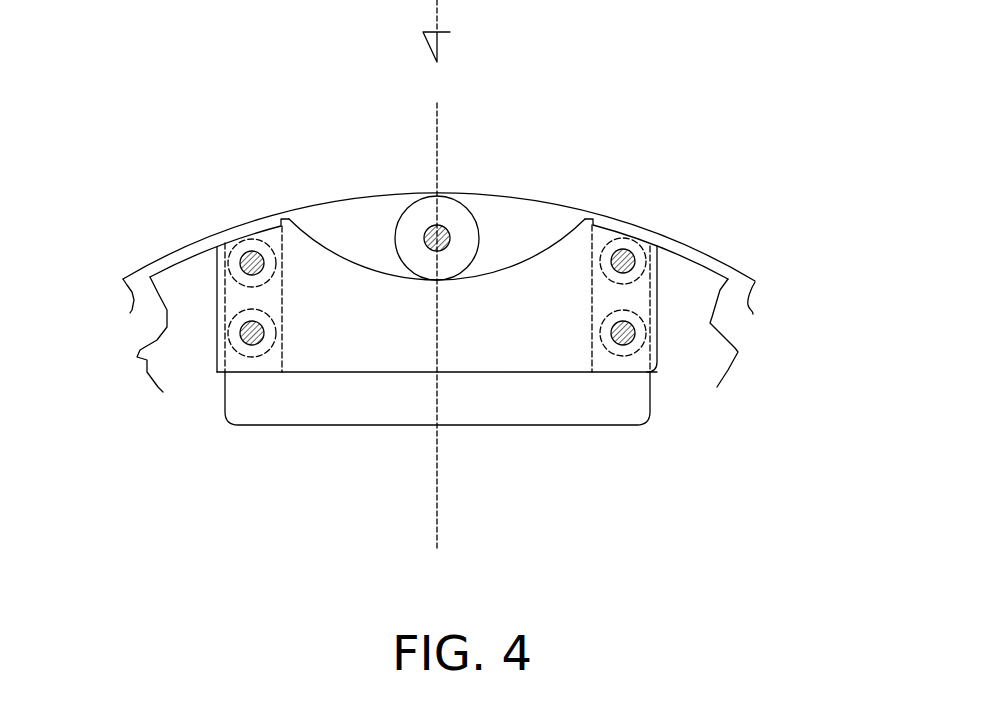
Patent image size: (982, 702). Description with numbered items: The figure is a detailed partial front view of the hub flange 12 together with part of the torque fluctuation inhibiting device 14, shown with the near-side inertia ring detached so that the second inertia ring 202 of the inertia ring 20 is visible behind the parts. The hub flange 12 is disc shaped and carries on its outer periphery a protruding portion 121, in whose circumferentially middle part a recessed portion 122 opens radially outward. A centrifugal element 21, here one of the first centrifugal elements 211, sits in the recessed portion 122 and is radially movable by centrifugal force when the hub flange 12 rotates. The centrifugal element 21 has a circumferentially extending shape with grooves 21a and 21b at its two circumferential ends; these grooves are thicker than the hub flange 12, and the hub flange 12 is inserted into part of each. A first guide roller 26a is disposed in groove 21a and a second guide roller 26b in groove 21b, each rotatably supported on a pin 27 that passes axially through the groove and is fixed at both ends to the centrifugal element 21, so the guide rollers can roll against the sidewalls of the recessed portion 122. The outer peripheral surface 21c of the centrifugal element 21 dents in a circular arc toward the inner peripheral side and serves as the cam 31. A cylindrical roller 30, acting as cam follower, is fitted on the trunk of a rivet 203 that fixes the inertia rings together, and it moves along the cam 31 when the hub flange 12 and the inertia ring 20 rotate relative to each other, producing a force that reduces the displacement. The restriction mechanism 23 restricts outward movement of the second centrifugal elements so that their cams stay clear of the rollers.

The torque fluctuation inhibiting device 14 is at (713, 88).
The roller 30 is at (423, 212).
The outer peripheral surface 21c is at (535, 247).
The cam 31 is at (466, 175).
The centrifugal element 21 is at (553, 235).
The first centrifugal element 211 is at (632, 239).
The rivet 203 is at (498, 200).
The second inertia ring 202 is at (328, 218).
The inertia ring 20 is at (282, 203).
The restriction mechanism 23 is at (253, 228).
The first guide roller 26a is at (630, 222).
The second guide roller 26b is at (240, 238).
The pin 27 is at (250, 335).
The protruding portion 121 is at (683, 270).
The hub flange 12 is at (745, 292).
The groove 21a is at (593, 297).
The groove 21b is at (282, 298).
The recessed portion 122 is at (495, 413).